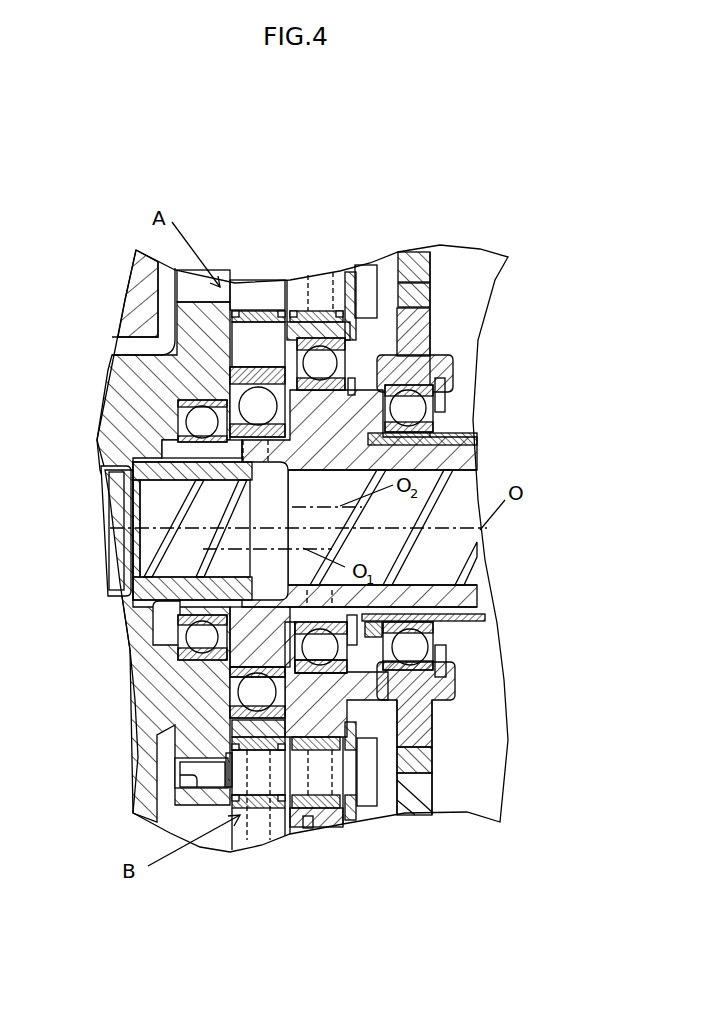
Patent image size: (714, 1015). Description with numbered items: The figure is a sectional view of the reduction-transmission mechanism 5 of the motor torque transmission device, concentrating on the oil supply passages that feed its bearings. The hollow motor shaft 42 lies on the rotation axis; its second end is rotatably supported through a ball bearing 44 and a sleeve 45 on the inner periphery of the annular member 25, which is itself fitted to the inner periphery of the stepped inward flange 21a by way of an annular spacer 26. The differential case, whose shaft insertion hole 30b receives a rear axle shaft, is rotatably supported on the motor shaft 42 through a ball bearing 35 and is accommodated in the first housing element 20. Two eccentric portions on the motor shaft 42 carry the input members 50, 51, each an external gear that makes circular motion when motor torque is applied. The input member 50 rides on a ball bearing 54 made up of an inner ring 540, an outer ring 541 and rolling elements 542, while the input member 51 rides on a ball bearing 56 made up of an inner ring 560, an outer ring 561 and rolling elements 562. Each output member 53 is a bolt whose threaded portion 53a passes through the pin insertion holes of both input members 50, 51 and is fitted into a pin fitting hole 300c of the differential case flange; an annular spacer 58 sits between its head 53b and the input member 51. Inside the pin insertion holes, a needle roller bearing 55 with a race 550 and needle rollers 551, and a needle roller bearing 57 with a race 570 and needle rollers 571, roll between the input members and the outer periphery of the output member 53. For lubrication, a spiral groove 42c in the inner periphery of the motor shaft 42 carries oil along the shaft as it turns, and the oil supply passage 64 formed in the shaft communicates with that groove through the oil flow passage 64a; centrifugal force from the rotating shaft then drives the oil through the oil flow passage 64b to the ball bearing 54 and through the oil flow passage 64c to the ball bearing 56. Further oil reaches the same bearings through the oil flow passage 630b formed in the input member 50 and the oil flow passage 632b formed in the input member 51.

The reduction-transmission mechanism 5 is at (210, 863).
The first housing element 20 is at (122, 295).
The inward flange 21a is at (415, 262).
The annular member 25 is at (423, 332).
The annular spacer 26 is at (432, 297).
The shaft insertion hole 30b is at (157, 555).
The ball bearing 35 is at (177, 407).
The motor shaft 42 is at (420, 462).
The spiral groove 42c is at (430, 547).
The ball bearing 44 is at (440, 645).
The sleeve 45 is at (435, 620).
The input member 50 is at (262, 847).
The input member 51 is at (335, 838).
The output member 53 is at (357, 812).
The threaded portion 53a is at (190, 766).
The head 53b is at (370, 788).
The ball bearing 54 is at (222, 697).
The inner ring 540 is at (238, 676).
The outer ring 541 is at (215, 700).
The rolling elements 542 is at (255, 692).
The needle roller bearing 55 is at (258, 302).
The race 550 is at (240, 314).
The needle rollers 551 is at (268, 305).
The ball bearing 56 is at (356, 673).
The inner ring 560 is at (335, 648).
The outer ring 561 is at (347, 692).
The rolling elements 562 is at (347, 667).
The needle roller bearing 57 is at (305, 814).
The race 570 is at (317, 812).
The needle rollers 571 is at (382, 818).
The annular spacer 58 is at (372, 822).
The oil supply passage 64 is at (452, 547).
The oil flow passage 64a is at (417, 502).
The oil flow passage 64b is at (165, 450).
The oil flow passage 64c is at (340, 600).
The pin fitting hole 300c is at (185, 778).
The oil flow passage 630b is at (255, 833).
The oil flow passage 632b is at (328, 282).